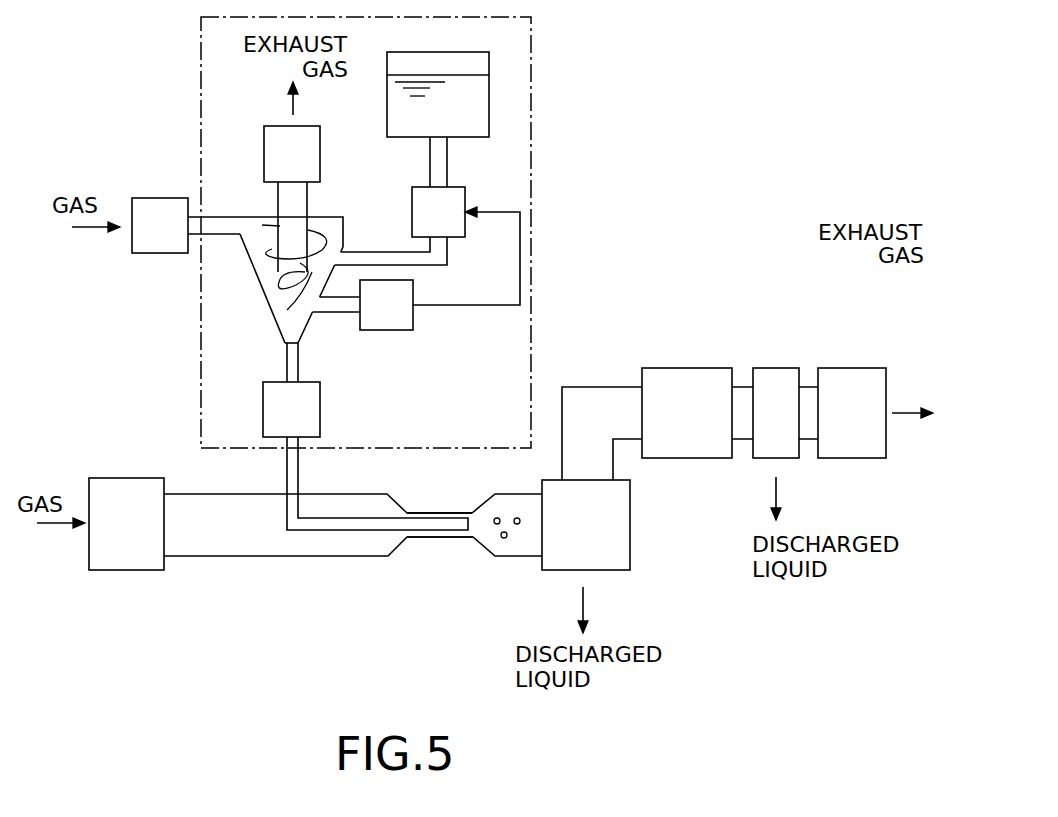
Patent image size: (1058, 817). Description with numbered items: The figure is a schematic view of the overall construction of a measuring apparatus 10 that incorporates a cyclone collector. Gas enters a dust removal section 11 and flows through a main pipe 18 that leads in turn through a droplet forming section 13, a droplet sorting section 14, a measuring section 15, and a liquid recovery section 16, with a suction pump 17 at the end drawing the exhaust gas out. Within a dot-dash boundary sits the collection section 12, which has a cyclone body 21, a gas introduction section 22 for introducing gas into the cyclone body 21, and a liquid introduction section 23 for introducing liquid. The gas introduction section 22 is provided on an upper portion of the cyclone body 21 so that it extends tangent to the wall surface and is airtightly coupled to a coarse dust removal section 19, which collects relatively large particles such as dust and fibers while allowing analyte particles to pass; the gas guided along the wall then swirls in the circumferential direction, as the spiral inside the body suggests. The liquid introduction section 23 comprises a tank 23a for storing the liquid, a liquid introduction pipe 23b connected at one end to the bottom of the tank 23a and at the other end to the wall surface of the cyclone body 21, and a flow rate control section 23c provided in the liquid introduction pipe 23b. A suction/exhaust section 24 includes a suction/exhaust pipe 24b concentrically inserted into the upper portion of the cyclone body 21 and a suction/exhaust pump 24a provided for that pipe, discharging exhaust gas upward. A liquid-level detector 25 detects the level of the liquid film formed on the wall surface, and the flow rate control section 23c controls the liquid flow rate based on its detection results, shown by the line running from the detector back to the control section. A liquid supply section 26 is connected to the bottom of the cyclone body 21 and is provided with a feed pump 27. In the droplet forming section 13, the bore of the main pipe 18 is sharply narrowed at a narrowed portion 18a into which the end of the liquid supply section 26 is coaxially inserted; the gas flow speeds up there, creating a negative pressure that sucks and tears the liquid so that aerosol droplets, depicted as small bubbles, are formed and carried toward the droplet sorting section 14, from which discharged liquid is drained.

The measuring apparatus 10 is at (98, 42).
The dust removal section 11 is at (128, 572).
The collection section 12 is at (533, 35).
The droplet forming section 13 is at (443, 546).
The droplet sorting section 14 is at (622, 548).
The measuring section 15 is at (684, 377).
The liquid recovery section 16 is at (774, 377).
The suction pump 17 is at (852, 377).
The main pipe 18 is at (255, 543).
The narrowed portion 18a is at (437, 512).
The coarse dust removal section 19 is at (152, 257).
The cyclone body 21 is at (257, 275).
The gas introduction section 22 is at (225, 227).
The liquid introduction section 23 is at (502, 133).
The tank 23a is at (490, 92).
The liquid introduction pipe 23b is at (447, 262).
The flow rate control section 23c is at (447, 198).
The suction/exhaust section 24 is at (249, 125).
The suction/exhaust pump 24a is at (308, 162).
The suction/exhaust pipe 24b is at (295, 202).
The liquid-level detector 25 is at (392, 320).
The liquid supply section 26 is at (293, 363).
The feed pump 27 is at (310, 413).